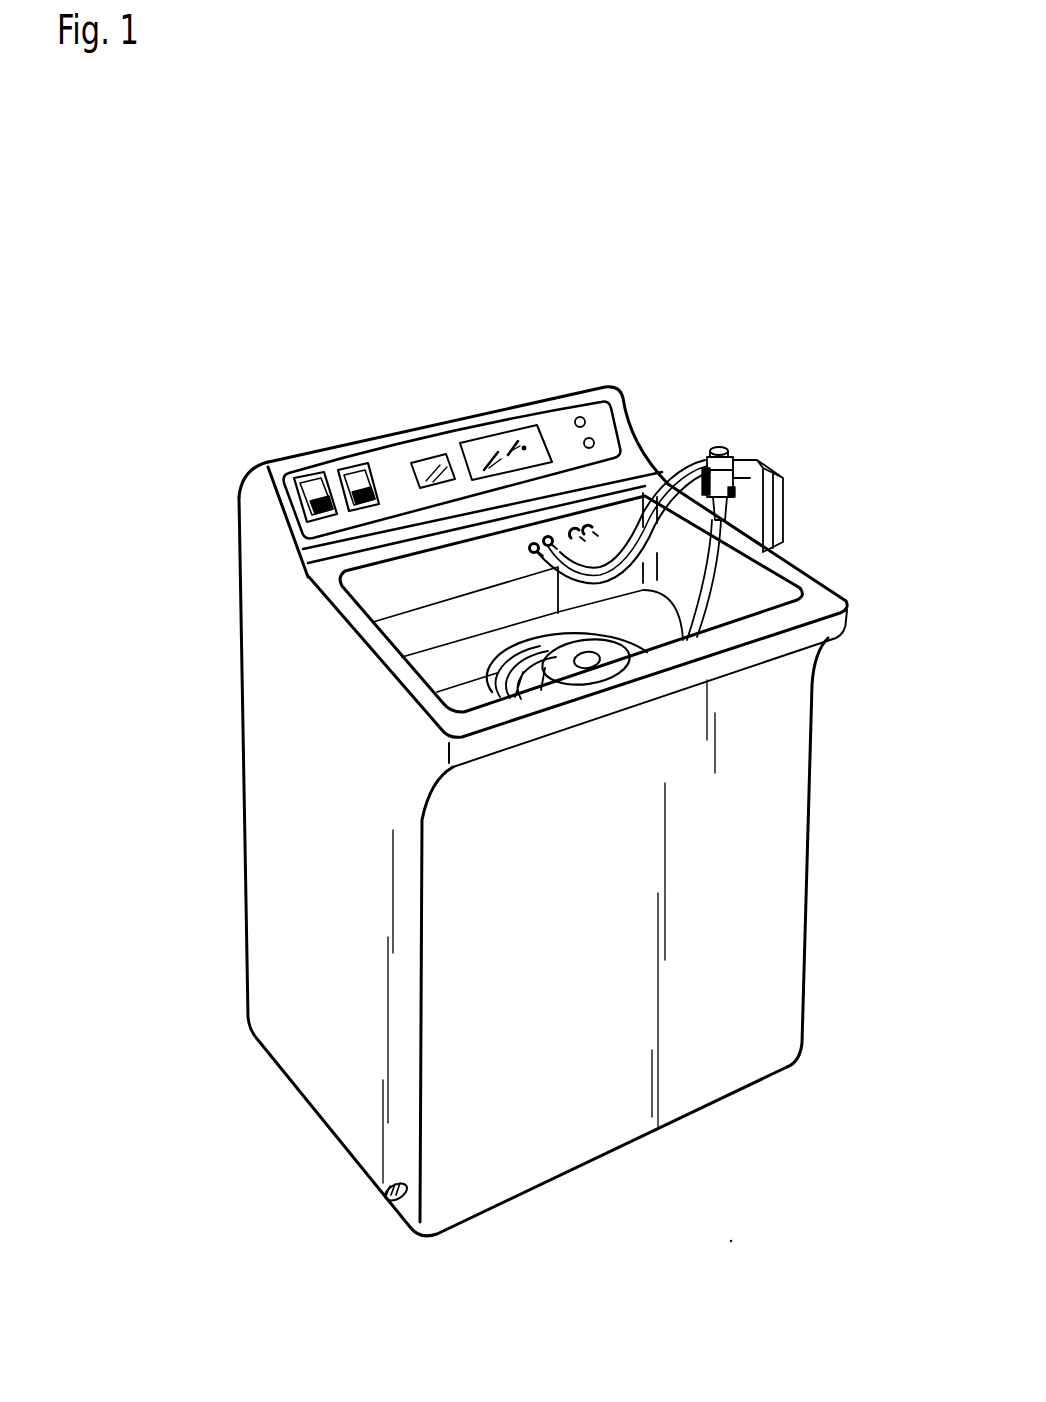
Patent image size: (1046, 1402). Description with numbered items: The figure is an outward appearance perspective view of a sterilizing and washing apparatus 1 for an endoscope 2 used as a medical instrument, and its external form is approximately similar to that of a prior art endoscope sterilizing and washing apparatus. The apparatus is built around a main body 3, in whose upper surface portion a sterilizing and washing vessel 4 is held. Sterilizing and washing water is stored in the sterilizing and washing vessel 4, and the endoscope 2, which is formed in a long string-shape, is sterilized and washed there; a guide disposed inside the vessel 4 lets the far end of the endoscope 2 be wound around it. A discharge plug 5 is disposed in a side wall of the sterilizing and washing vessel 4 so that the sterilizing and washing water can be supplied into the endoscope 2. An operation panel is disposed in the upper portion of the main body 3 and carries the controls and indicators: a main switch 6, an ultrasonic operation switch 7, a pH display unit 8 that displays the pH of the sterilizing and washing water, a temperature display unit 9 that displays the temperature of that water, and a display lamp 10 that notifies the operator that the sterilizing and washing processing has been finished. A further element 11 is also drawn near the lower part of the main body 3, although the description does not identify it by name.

The sterilizing and washing apparatus 1 is at (811, 416).
The endoscope 2 is at (717, 447).
The main body 3 is at (782, 842).
The sterilizing and washing vessel 4 is at (762, 597).
The discharge plug 5 is at (533, 548).
The main switch 6 is at (310, 487).
The ultrasonic operation switch 7 is at (350, 477).
The pH display unit 8 is at (423, 467).
The temperature display unit 9 is at (500, 443).
The display lamp 10 is at (580, 417).
The drain plug 11 is at (383, 1200).